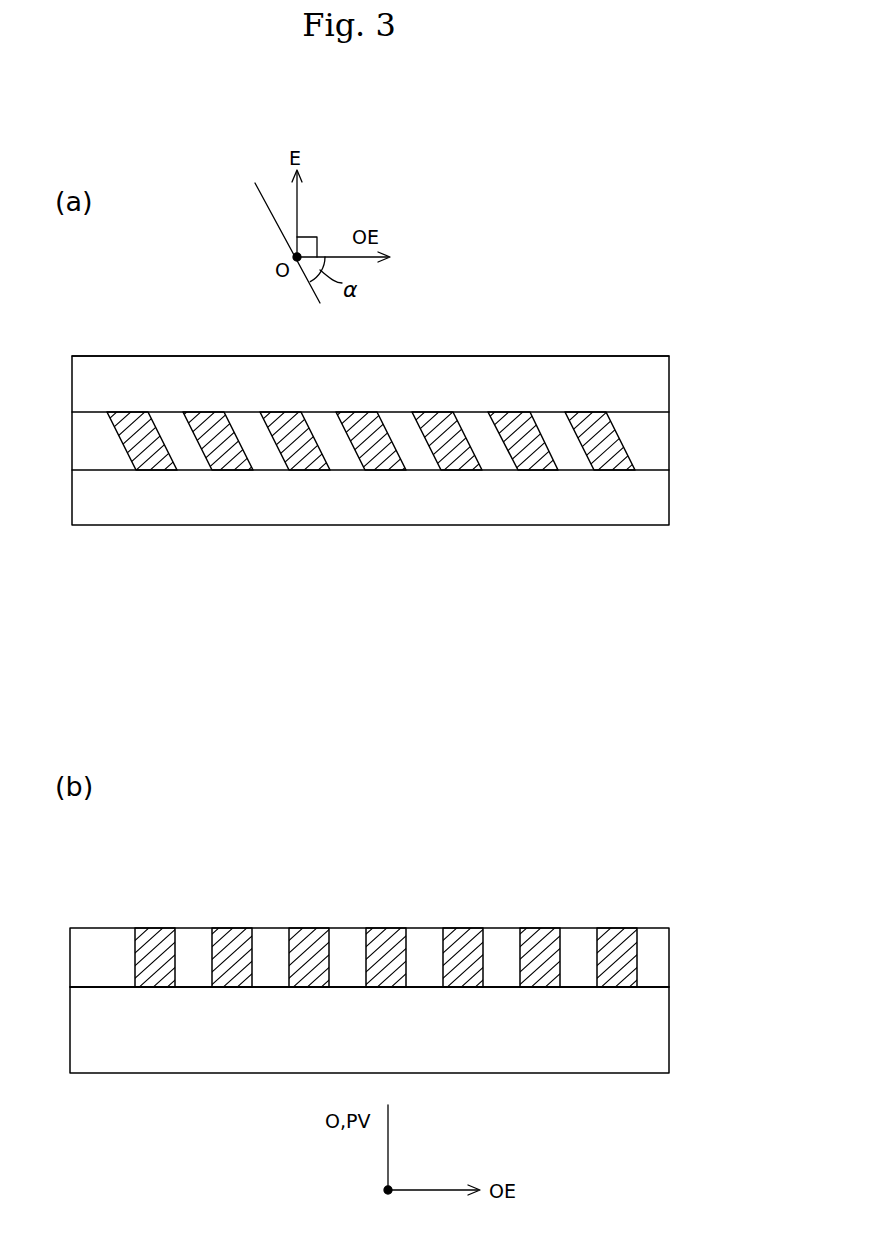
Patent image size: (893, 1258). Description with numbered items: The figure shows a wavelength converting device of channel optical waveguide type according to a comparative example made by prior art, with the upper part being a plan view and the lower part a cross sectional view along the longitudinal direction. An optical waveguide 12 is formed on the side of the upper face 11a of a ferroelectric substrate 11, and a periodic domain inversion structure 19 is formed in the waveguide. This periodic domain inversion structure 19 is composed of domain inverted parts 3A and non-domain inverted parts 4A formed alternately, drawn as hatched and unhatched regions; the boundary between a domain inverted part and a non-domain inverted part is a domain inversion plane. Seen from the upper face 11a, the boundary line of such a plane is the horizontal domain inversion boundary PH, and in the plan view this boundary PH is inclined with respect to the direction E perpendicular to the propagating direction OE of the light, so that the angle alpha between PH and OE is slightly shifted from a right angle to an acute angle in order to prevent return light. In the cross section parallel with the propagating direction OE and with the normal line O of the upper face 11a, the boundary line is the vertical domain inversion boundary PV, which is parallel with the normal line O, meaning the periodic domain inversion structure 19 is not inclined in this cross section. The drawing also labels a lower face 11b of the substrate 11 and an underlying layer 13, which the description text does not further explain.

The ferroelectric substrate 11 is at (674, 353).
The upper face 11a is at (558, 380).
The lower surface of substrate 11b is at (581, 989).
The optical waveguide 12 is at (658, 445).
The support layer 13 is at (657, 1026).
The periodic domain inversion structure 19 is at (232, 404).
The domain inverted parts 3A is at (445, 432).
The non-domain inverted parts 4A is at (548, 432).
The horizontal domain inversion boundary PH is at (240, 440).
The vertical domain inversion boundary PV is at (213, 948).